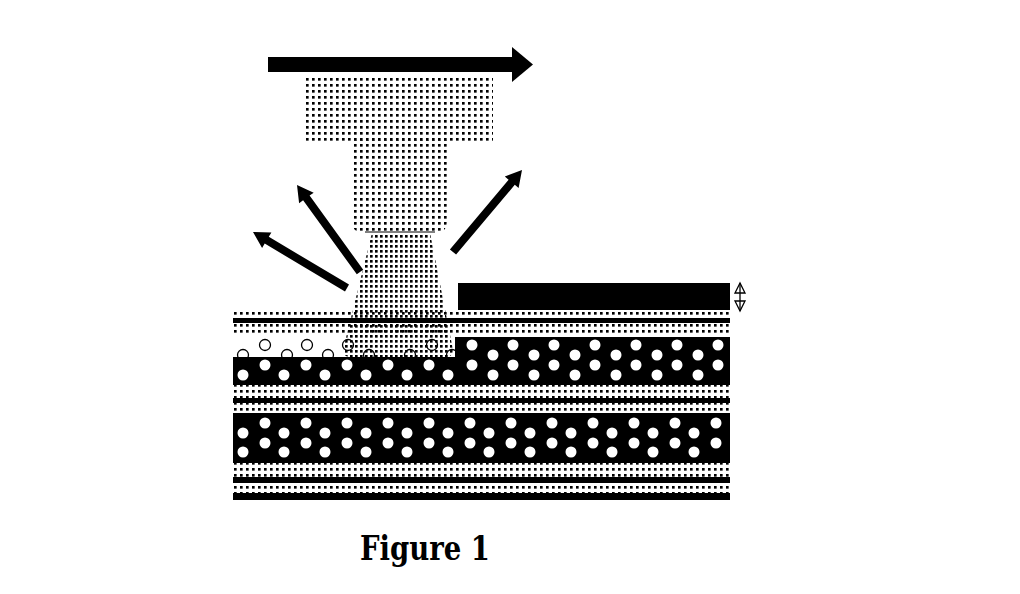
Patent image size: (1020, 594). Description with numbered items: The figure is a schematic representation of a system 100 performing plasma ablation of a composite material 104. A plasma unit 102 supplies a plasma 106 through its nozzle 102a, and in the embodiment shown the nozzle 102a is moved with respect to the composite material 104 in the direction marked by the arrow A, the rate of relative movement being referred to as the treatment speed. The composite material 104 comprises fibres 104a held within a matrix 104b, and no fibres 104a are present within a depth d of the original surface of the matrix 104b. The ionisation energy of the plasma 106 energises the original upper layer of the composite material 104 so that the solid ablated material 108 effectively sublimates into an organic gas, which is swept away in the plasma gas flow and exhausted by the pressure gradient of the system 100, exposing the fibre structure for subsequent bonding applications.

The system 100 is at (220, 140).
The plasma unit 102 is at (455, 155).
The nozzle 102a is at (413, 213).
The composite material 104 is at (470, 327).
The fibres 104a is at (237, 375).
The matrix 104b is at (658, 287).
The plasma 106 is at (418, 285).
The ablated material 108 is at (358, 214).